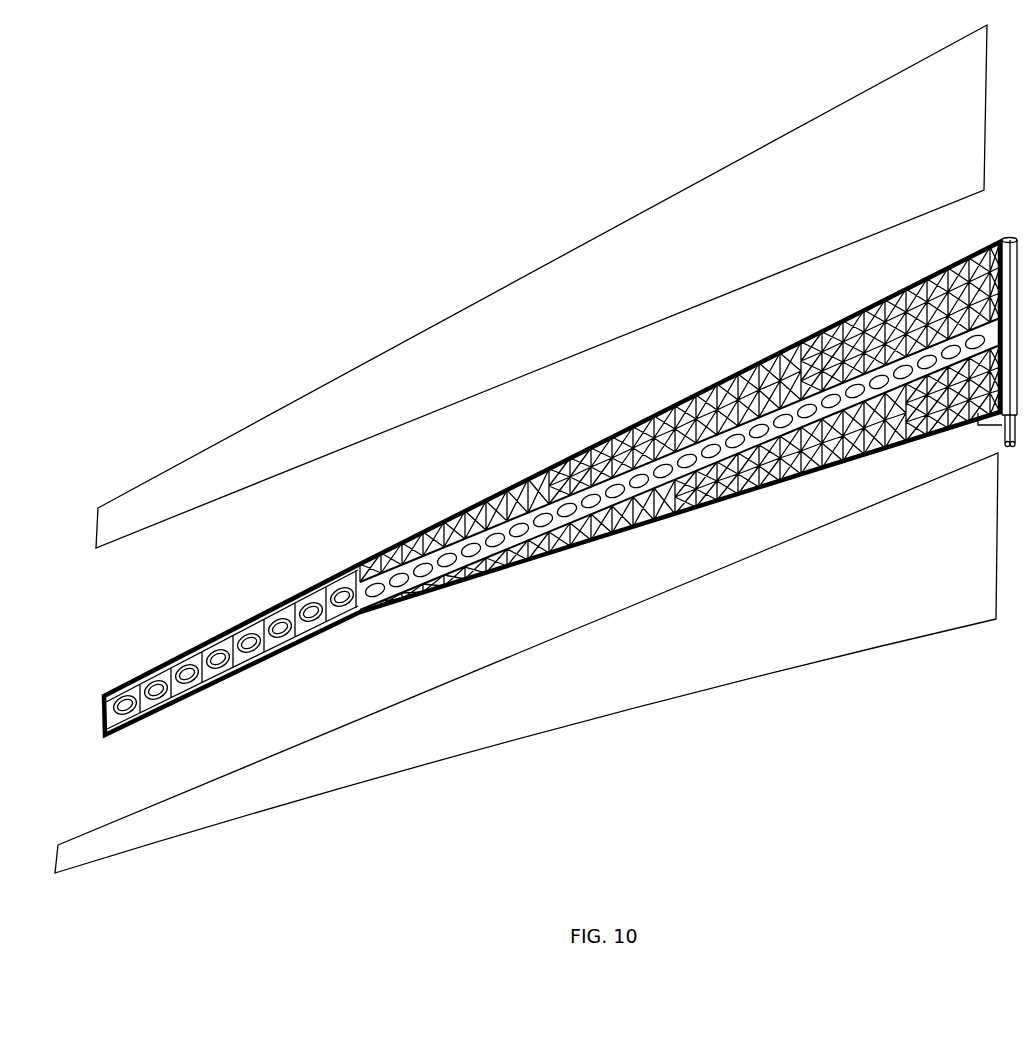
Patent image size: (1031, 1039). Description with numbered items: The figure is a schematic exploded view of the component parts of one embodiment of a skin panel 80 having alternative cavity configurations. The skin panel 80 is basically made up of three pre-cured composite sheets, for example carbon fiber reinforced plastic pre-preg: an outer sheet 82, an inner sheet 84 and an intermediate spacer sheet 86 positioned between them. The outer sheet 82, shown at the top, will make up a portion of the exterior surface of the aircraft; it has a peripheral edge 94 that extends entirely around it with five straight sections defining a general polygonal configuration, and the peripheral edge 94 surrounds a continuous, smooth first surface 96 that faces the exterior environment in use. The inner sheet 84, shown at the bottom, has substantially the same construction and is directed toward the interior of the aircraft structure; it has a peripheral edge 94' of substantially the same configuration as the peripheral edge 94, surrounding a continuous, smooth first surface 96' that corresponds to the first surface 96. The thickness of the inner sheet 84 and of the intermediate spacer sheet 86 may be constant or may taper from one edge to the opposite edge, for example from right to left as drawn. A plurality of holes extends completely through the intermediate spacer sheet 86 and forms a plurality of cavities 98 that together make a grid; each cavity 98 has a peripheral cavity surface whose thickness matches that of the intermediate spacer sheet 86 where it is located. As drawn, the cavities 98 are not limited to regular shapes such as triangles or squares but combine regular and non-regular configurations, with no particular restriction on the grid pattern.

The skin panel 80 is at (256, 227).
The outer sheet 82 is at (427, 322).
The inner sheet 84 is at (673, 704).
The intermediate spacer sheet 86 is at (549, 512).
The peripheral edge 94 is at (633, 175).
The first surface 96 is at (784, 106).
The peripheral edge 94' is at (858, 700).
The first surface 96' is at (718, 553).
The cavities 98 is at (910, 362).